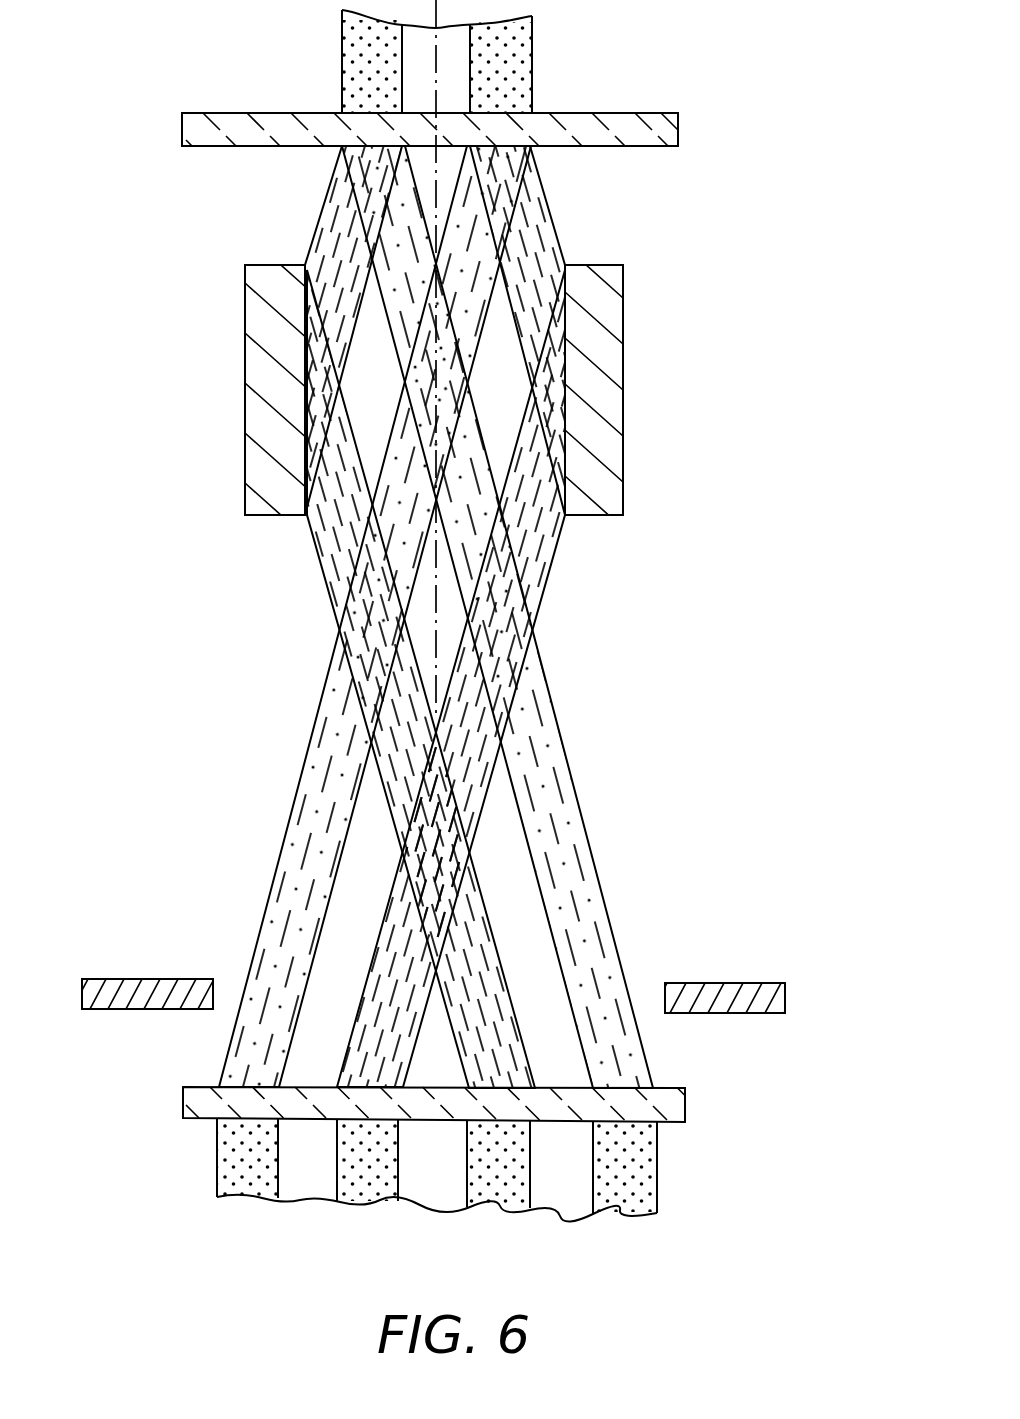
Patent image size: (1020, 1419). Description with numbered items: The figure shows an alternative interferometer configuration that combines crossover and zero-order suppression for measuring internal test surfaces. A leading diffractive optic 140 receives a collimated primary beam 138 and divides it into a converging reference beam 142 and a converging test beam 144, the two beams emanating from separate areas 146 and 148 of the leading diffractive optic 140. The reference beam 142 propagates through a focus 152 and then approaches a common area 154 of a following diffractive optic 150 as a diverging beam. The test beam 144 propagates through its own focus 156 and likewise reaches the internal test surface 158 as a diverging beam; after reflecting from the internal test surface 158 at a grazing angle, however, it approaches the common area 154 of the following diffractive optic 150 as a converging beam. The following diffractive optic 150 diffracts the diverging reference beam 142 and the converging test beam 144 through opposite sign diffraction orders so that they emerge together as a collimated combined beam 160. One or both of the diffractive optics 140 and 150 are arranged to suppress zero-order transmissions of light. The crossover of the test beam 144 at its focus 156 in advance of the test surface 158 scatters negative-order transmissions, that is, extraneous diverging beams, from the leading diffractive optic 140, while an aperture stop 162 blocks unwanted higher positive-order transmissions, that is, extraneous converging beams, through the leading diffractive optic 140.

The collimated primary beam 138 is at (262, 1185).
The leading diffractive optic 140 is at (183, 1100).
The reference beam 142 is at (278, 865).
The test beam 144 is at (533, 577).
The separate area of the leading diffractive optic 146 is at (235, 1122).
The separate area of the leading diffractive optic 148 is at (378, 1105).
The following diffractive optic 150 is at (182, 128).
The focus 152 is at (412, 378).
The common area 154 is at (350, 124).
The focus 156 is at (410, 862).
The internal test surface 158 is at (563, 406).
The collimated combined beam 160 is at (342, 42).
The aperture stop 162 is at (723, 983).